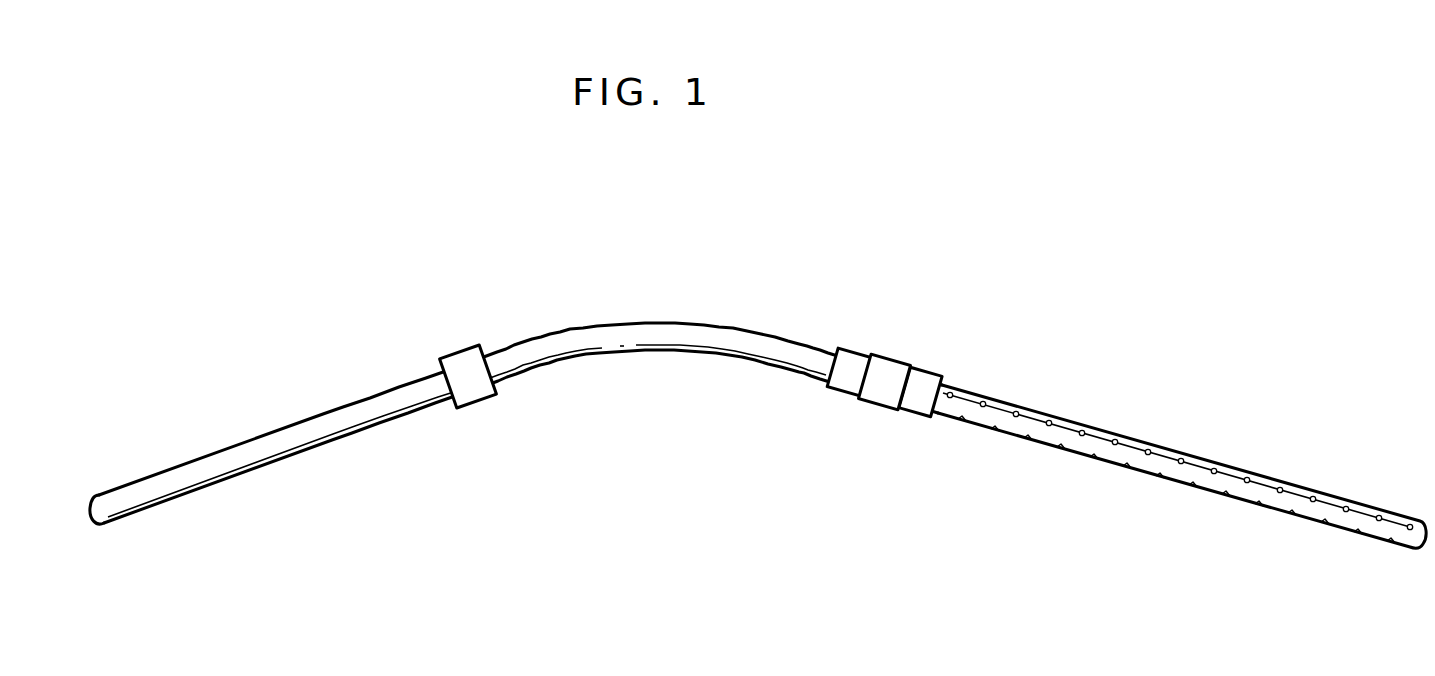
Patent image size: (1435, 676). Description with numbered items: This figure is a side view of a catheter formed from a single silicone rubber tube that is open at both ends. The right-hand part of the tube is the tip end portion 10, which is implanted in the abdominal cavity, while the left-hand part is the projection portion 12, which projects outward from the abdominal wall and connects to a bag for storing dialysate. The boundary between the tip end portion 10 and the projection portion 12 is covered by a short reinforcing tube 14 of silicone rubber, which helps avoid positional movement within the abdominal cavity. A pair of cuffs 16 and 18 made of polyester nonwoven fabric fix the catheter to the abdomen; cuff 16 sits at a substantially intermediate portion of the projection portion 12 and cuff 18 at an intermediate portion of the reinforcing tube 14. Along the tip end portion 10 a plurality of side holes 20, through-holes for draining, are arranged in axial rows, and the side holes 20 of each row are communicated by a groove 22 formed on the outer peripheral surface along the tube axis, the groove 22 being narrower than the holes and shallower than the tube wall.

The tip end portion 10 is at (1182, 465).
The projection portion 12 is at (368, 398).
The reinforcing tube 14 is at (863, 352).
The cuff 16 is at (468, 360).
The cuff 18 is at (897, 368).
The side holes 20 is at (1348, 499).
The groove 22 is at (1296, 486).